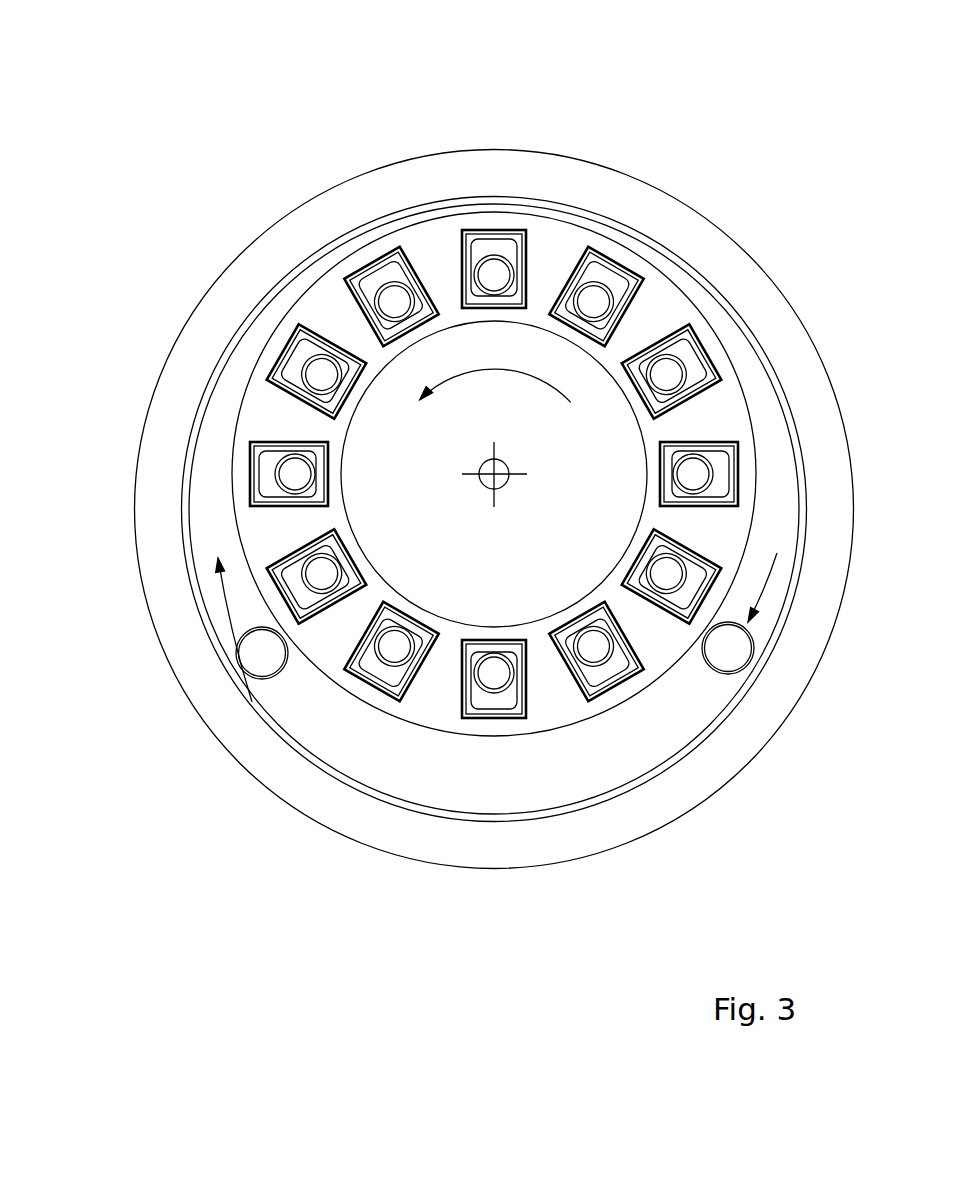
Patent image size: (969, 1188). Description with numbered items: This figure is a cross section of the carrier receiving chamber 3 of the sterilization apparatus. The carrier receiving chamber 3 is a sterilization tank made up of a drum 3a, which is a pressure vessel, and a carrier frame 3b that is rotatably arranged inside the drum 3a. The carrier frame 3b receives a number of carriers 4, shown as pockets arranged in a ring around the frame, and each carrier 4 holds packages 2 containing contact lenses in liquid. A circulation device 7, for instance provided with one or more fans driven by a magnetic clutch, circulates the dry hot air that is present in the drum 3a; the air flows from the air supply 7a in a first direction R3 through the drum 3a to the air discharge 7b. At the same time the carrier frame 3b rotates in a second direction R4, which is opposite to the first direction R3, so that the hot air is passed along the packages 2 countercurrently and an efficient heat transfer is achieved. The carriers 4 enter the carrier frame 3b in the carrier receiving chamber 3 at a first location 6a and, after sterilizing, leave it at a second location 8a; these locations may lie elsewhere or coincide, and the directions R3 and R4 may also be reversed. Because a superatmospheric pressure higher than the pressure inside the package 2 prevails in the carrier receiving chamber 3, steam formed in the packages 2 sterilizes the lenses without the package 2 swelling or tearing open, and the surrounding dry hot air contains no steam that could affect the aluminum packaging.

The package 2 is at (269, 466).
The carrier receiving chamber 3 is at (255, 238).
The drum 3a is at (492, 173).
The carrier frame 3b is at (662, 301).
The carrier 4 is at (199, 477).
The first location 6a is at (617, 687).
The circulation device 7 is at (495, 712).
The air supply 7a is at (267, 666).
The air discharge 7b is at (725, 663).
The second location 8a is at (373, 688).
The first direction R3 is at (233, 610).
The second direction R4 is at (495, 371).